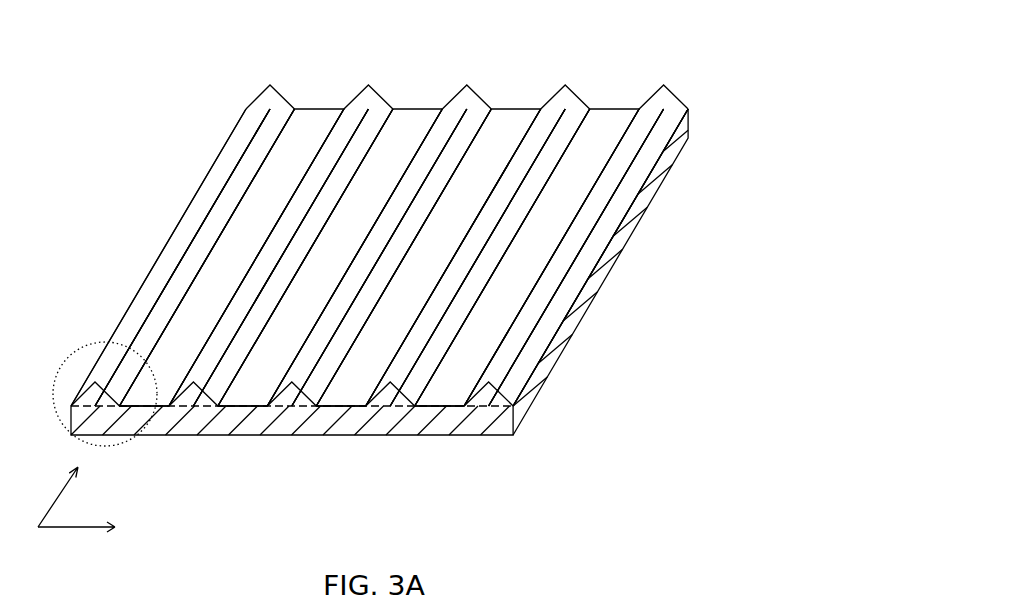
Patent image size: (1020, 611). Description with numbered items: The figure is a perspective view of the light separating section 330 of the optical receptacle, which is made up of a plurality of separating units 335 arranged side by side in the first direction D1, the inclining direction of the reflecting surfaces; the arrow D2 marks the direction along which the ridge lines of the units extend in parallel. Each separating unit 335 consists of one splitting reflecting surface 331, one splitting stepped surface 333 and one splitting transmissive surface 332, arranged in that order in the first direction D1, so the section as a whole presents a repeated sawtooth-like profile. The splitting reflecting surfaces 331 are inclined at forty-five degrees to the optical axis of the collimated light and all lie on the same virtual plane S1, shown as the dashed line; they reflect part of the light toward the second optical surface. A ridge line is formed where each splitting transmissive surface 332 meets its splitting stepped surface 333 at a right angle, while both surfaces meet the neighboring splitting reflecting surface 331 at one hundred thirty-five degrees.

The light separating section 330 is at (658, 57).
The splitting reflecting surface 331 is at (250, 392).
The splitting transmissive surface 332 is at (317, 382).
The splitting stepped surface 333 is at (288, 382).
The separating unit 335 is at (318, 513).
The virtual plane S1 is at (210, 407).
The first direction D1 is at (76, 517).
The second direction D2 is at (50, 497).